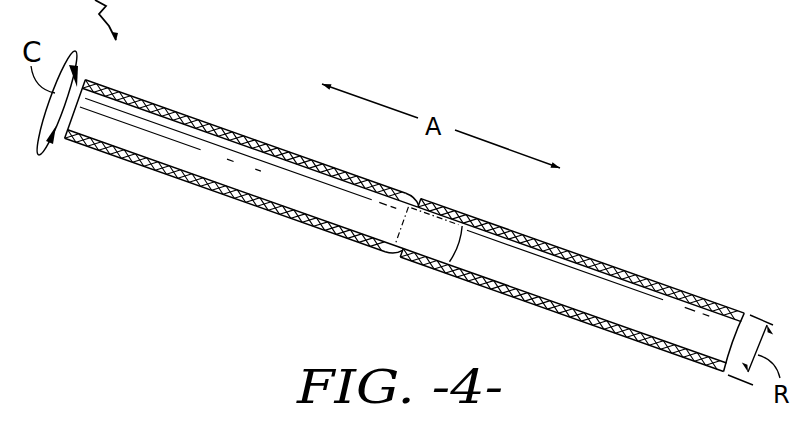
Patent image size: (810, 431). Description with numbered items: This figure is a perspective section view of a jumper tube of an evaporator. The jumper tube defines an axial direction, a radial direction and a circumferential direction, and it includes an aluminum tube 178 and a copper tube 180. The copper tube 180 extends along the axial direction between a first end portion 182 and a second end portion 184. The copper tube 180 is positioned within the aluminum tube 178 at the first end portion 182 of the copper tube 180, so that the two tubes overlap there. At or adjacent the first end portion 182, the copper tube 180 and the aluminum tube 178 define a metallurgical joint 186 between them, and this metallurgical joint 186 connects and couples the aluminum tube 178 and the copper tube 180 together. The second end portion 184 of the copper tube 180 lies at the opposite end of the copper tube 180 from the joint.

The aluminum tube 178 is at (613, 266).
The copper tube 180 is at (176, 110).
The first end portion 182 is at (450, 229).
The second end portion 184 is at (59, 166).
The metallurgical joint 186 is at (441, 199).